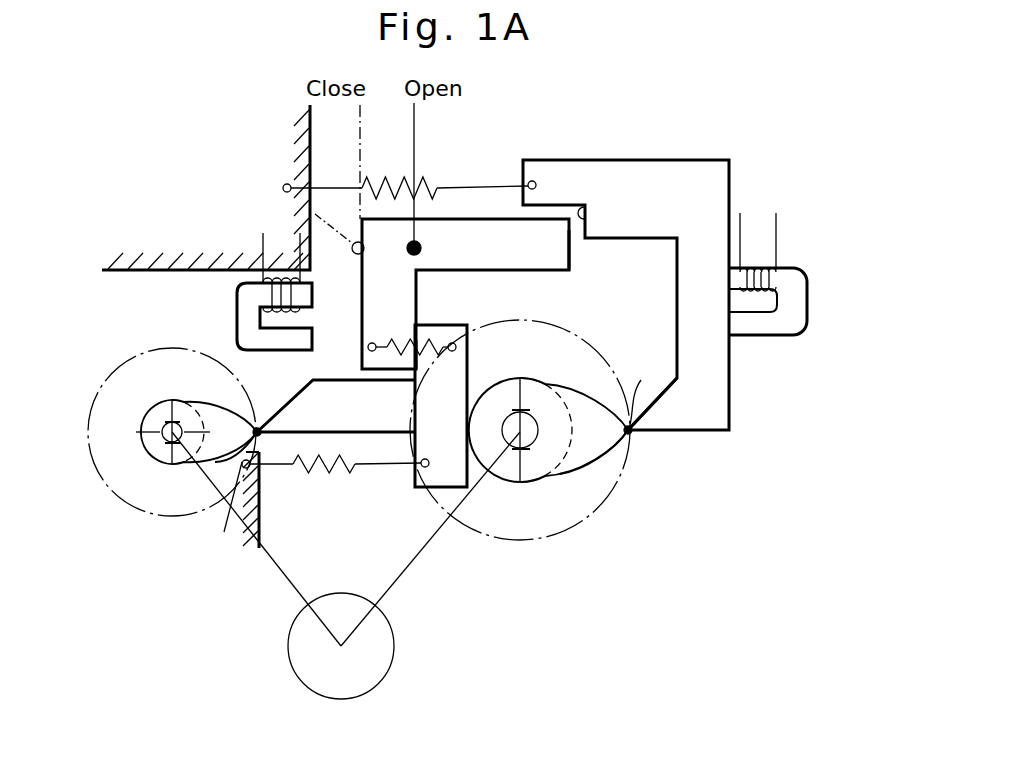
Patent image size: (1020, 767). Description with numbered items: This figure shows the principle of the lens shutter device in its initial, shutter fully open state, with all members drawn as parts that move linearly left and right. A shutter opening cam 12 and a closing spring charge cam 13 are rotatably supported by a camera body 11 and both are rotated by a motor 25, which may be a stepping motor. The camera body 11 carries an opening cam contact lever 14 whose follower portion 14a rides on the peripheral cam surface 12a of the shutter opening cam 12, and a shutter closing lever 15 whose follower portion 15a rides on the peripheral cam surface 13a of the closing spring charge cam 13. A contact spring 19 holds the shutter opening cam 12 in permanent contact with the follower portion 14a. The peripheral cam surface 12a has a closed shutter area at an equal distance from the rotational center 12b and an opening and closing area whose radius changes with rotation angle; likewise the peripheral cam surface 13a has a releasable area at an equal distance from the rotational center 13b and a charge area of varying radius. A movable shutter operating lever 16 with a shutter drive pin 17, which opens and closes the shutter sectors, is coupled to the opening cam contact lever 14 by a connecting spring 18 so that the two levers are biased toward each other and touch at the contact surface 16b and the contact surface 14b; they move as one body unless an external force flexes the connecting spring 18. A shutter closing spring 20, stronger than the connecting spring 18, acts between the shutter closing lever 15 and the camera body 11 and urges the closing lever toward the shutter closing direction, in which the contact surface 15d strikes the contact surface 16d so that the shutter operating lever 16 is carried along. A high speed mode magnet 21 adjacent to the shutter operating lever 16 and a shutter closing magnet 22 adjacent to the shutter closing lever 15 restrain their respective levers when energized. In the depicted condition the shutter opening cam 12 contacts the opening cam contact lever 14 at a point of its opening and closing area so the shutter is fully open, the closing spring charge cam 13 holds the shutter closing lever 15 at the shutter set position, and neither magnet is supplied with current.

The camera body 11 is at (298, 125).
The shutter opening cam 12 is at (214, 413).
The peripheral cam surface 12a is at (243, 461).
The rotational center 12b is at (164, 440).
The closing spring charge cam 13 is at (600, 450).
The peripheral cam surface 13a is at (565, 484).
The rotational center 13b is at (537, 446).
The opening cam contact lever 14 is at (360, 423).
The follower portion 14a is at (294, 422).
The contact surface 14b is at (414, 357).
The shutter closing lever 15 is at (686, 170).
The follower portion 15a is at (659, 428).
The contact surface 15d is at (575, 214).
The shutter operating lever 16 is at (489, 228).
The contact surface 16b is at (419, 335).
The contact surface 16d is at (571, 242).
The shutter drive pin 17 is at (311, 209).
The connecting spring 18 is at (374, 344).
The contact spring 19 is at (303, 474).
The shutter closing spring 20 is at (433, 178).
The high speed mode magnet 21 is at (240, 318).
The shutter closing magnet 22 is at (793, 276).
The motor 25 is at (395, 645).